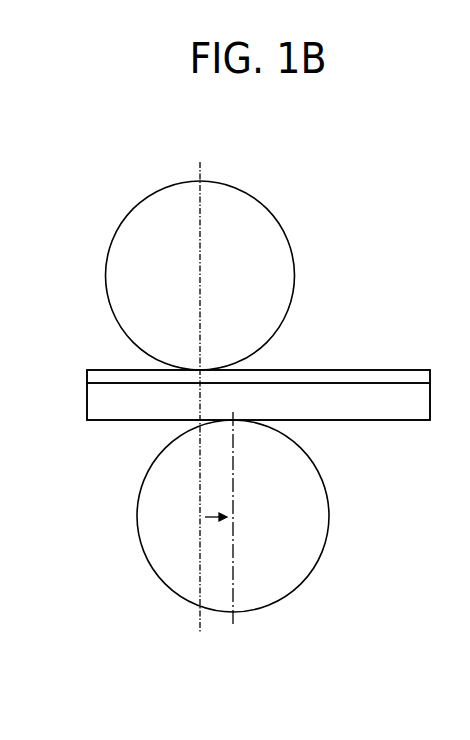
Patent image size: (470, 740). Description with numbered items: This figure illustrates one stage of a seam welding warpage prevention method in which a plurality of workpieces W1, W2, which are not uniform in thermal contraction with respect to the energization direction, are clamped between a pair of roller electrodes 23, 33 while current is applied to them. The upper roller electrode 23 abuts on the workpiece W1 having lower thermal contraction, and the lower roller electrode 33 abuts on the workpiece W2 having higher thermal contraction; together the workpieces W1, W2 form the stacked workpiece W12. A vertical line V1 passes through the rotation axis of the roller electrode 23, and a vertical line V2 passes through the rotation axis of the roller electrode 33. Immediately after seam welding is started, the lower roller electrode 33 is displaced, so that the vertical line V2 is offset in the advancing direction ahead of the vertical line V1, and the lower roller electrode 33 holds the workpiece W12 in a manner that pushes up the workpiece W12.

The roller electrode 23 is at (160, 198).
The roller electrode 33 is at (175, 582).
The vertical line V1 is at (203, 218).
The vertical line V2 is at (235, 578).
The workpiece W1 is at (392, 376).
The workpiece W2 is at (387, 414).
The workpiece W12 is at (102, 370).